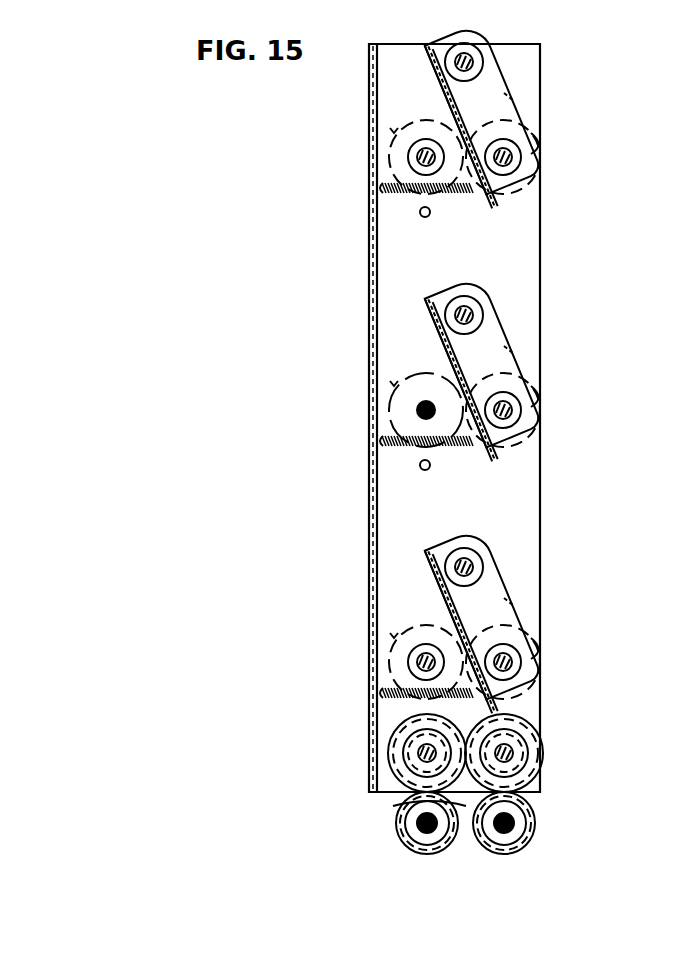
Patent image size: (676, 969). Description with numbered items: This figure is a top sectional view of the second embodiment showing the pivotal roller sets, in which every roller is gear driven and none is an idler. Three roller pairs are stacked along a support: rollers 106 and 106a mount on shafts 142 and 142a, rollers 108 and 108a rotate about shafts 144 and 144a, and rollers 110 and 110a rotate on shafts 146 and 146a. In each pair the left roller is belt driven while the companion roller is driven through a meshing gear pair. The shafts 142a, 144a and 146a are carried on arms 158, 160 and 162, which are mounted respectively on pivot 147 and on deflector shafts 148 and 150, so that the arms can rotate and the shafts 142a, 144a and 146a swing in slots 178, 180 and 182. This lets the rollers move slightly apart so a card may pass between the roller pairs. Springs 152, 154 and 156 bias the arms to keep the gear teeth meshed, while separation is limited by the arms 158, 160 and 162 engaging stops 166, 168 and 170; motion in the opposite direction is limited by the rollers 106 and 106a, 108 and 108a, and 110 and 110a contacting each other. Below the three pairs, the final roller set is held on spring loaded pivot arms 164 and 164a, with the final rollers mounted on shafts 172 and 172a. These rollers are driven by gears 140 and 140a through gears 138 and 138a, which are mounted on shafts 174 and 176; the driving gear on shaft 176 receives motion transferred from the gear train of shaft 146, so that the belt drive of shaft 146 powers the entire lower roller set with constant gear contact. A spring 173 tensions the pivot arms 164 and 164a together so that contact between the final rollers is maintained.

The roller 106 is at (392, 131).
The roller 106a is at (532, 200).
The roller 108 is at (381, 393).
The roller 108a is at (548, 419).
The roller 110 is at (380, 660).
The roller 110a is at (558, 662).
The gear 138 is at (390, 737).
The gear 138a is at (542, 745).
The gear 140 is at (400, 826).
The gear 140a is at (535, 824).
The shaft 142 is at (418, 157).
The shaft 142a is at (512, 160).
The shaft 144 is at (367, 403).
The shaft 144a is at (561, 413).
The shaft 146 is at (373, 662).
The shaft 146a is at (552, 677).
The pivot 147 is at (472, 52).
The deflector shaft 148 is at (527, 308).
The deflector shaft 150 is at (443, 551).
The spring 152 is at (400, 196).
The spring 154 is at (386, 456).
The spring 156 is at (392, 700).
The arm 158 is at (498, 80).
The arm 160 is at (515, 369).
The arm 162 is at (517, 621).
The pivot arm 164 is at (368, 791).
The pivot arm 164a is at (560, 788).
The stop 166 is at (518, 100).
The stop 168 is at (558, 354).
The stop 170 is at (568, 604).
The shaft 172 is at (406, 840).
The shaft 172a is at (527, 838).
The spring 173 is at (393, 806).
The shaft 174 is at (404, 757).
The shaft 176 is at (528, 762).
The slot 178 is at (538, 145).
The slot 180 is at (574, 396).
The slot 182 is at (573, 640).